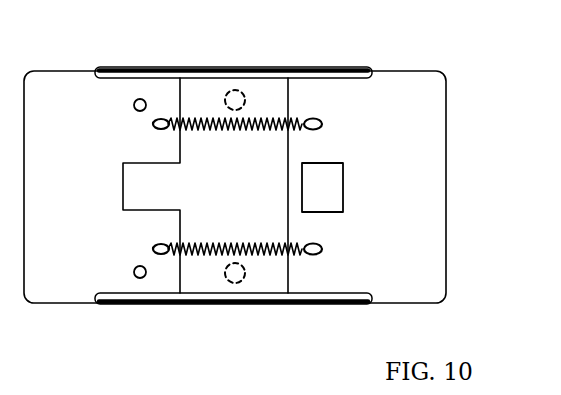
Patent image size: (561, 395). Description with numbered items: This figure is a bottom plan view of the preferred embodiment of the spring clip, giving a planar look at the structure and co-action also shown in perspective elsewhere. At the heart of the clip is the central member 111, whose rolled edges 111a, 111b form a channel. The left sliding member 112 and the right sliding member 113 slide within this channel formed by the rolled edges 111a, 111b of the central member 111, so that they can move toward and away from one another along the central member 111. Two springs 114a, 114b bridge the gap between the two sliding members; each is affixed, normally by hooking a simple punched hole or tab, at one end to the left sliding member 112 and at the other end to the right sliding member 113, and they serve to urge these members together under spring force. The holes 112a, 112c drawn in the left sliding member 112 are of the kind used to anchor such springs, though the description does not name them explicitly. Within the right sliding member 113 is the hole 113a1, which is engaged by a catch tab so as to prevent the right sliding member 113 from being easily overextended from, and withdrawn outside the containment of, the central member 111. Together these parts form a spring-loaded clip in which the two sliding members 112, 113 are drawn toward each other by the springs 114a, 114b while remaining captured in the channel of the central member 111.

The central member 111 is at (240, 197).
The left sliding member 112 is at (86, 197).
The right sliding member 113 is at (412, 201).
The rolled edge 111a is at (235, 90).
The rolled edge 111b is at (238, 284).
The hole 112a is at (141, 279).
The hole 112c is at (141, 99).
The hole 113a1 is at (333, 200).
The spring 114a is at (263, 121).
The spring 114b is at (268, 257).